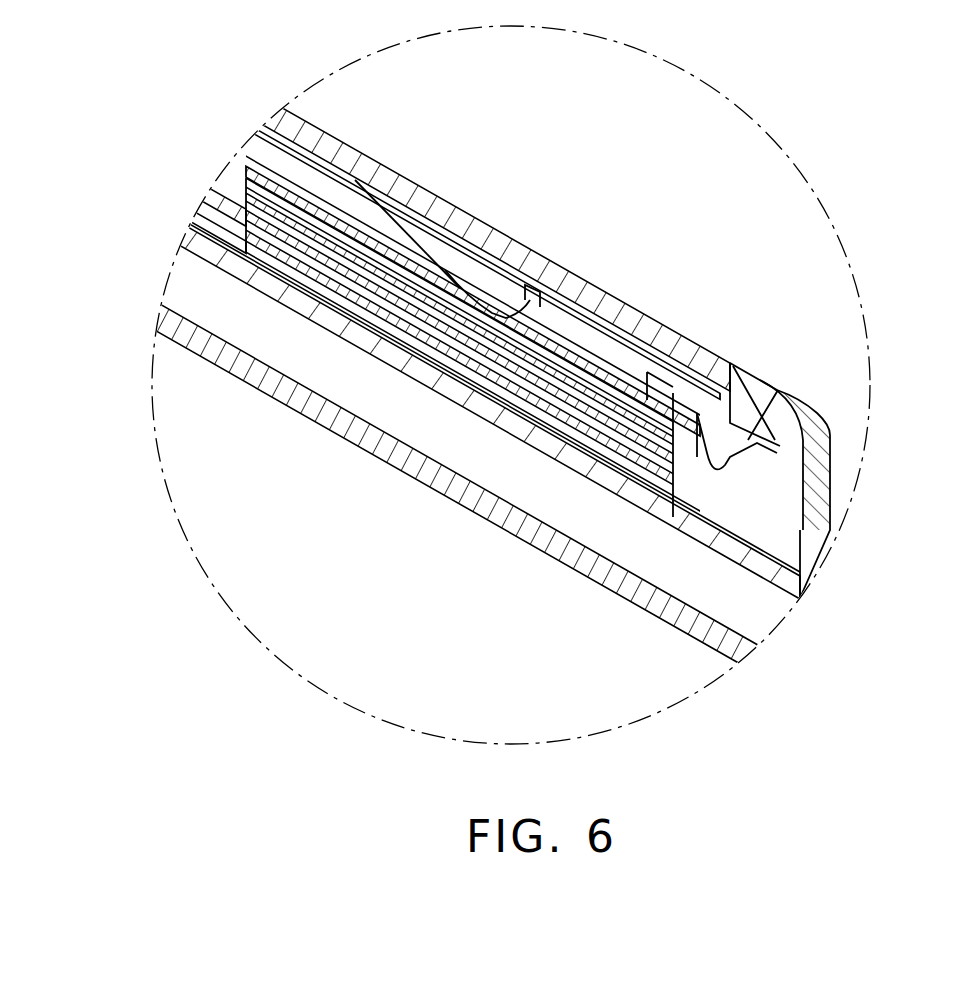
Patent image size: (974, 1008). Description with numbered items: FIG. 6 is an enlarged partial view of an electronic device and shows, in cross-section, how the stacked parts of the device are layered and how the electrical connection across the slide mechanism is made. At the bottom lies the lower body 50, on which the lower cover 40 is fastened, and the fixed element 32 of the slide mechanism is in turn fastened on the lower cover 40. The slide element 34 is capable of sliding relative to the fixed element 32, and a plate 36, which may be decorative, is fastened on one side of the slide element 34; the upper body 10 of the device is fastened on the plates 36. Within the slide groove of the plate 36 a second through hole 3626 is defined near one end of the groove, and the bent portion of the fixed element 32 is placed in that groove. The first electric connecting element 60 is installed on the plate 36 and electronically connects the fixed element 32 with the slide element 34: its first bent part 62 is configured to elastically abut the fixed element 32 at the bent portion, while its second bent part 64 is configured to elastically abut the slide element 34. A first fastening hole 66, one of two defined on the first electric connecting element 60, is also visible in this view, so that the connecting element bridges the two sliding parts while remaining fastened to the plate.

The upper body 10 is at (837, 466).
The fixed element 32 is at (243, 222).
The slide element 34 is at (222, 195).
The plate 36 is at (255, 150).
The second through hole 3626 is at (577, 266).
The lower cover 40 is at (753, 565).
The lower body 50 is at (683, 618).
The first electric connecting element 60 is at (612, 358).
The first bent part 62 is at (458, 290).
The second bent part 64 is at (737, 418).
The first fastening hole 66 is at (592, 328).